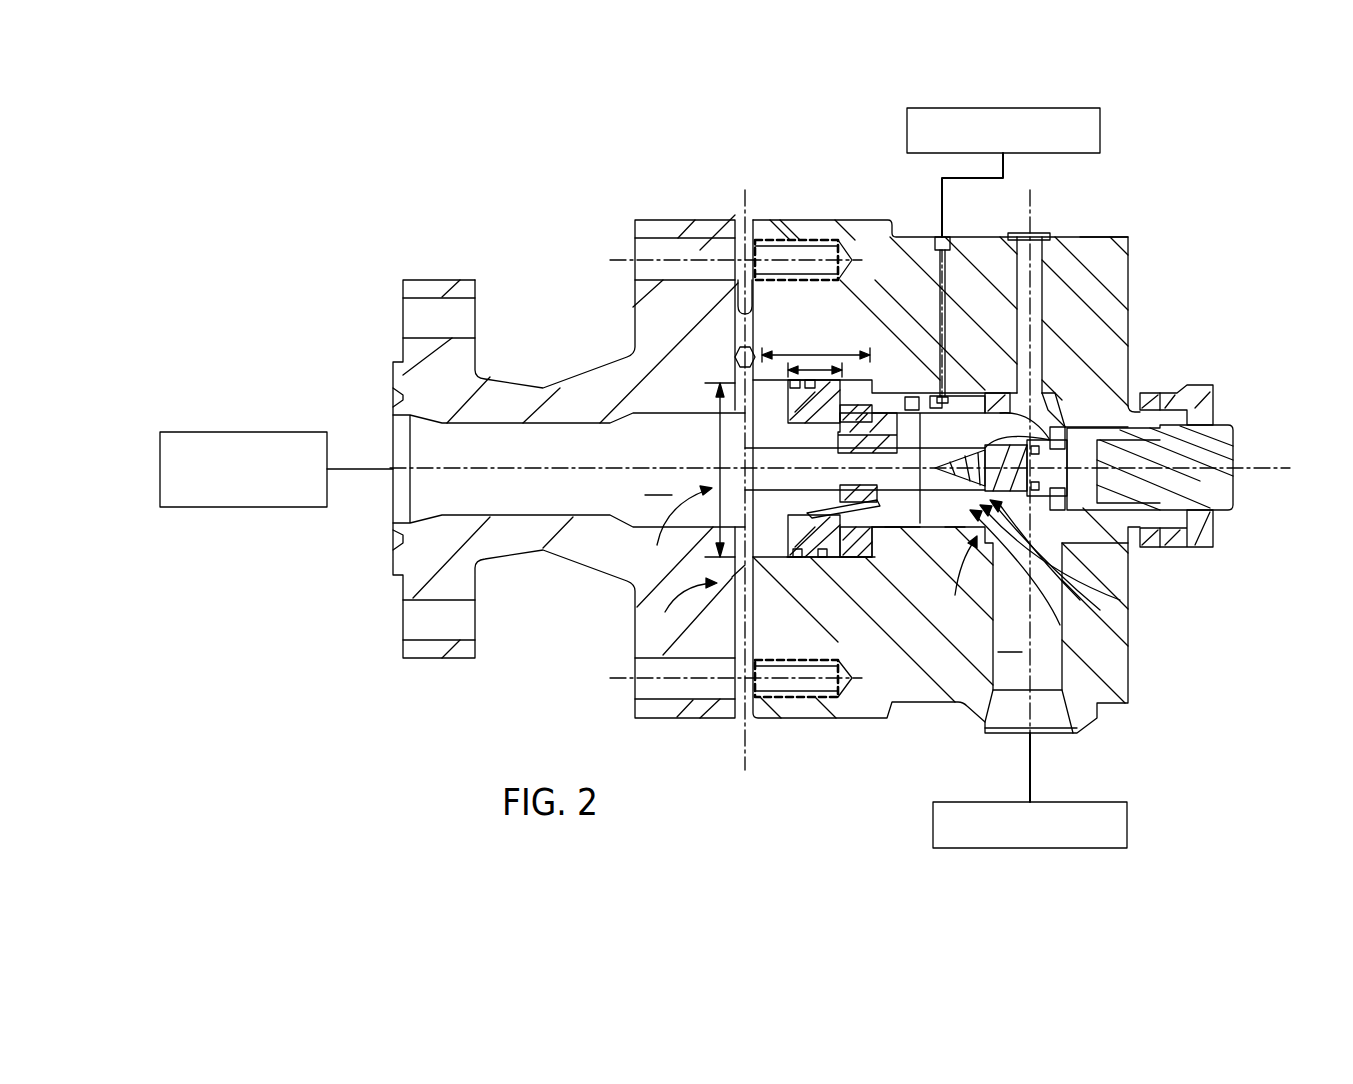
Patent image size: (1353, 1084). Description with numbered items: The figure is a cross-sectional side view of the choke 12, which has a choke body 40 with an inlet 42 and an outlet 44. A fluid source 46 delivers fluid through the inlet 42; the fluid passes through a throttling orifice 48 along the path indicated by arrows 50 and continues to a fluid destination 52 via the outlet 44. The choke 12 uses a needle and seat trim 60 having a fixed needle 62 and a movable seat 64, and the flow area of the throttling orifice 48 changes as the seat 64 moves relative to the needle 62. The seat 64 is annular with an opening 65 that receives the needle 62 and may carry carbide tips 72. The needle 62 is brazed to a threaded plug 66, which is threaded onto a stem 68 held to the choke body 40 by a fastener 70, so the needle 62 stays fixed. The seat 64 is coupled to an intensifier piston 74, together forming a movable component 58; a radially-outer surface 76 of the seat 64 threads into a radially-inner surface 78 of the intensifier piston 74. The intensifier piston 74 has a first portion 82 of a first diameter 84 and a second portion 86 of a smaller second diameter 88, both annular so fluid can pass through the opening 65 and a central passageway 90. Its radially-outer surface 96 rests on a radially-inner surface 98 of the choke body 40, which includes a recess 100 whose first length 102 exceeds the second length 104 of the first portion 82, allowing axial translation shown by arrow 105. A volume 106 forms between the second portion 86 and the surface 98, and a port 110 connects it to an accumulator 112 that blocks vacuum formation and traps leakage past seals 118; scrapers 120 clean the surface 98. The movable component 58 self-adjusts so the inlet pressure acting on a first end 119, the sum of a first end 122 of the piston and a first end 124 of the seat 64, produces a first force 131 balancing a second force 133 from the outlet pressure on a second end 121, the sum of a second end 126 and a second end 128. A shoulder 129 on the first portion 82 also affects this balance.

The choke 12 is at (1090, 214).
The choke body 40 is at (898, 255).
The inlet 42 is at (1043, 715).
The outlet 44 is at (536, 466).
The fluid source 46 is at (1127, 830).
The throttling orifice 48 is at (1005, 500).
The arrows 50 is at (1040, 520).
The fluid destination 52 is at (243, 432).
The movable component 58 is at (856, 478).
The needle and seat trim 60 is at (1128, 555).
The fixed needle 62 is at (1228, 446).
The movable seat 64 is at (1045, 382).
The opening 65 is at (915, 468).
The threaded plug 66 is at (1028, 434).
The stem 68 is at (1195, 498).
The fastener 70 is at (1205, 393).
The carbide tips 72 is at (1050, 510).
The intensifier piston 74 is at (788, 516).
The radially-outer surface of the seat 76 is at (898, 525).
The radially-inner surface of the intensifier piston 78 is at (893, 523).
The first portion 82 is at (790, 560).
The first diameter 84 is at (718, 412).
The second portion 86 is at (953, 530).
The second diameter 88 is at (1045, 418).
The central passageway 90 is at (836, 456).
The radially-outer surface of the intensifier piston 96 is at (847, 560).
The radially-inner surface of the choke body 98 is at (972, 540).
The recess 100 is at (865, 545).
The first length 102 is at (757, 327).
The second length 104 is at (812, 352).
The arrow 105 is at (735, 302).
The volume 106 is at (852, 540).
The port 110 is at (948, 278).
The accumulator 112 is at (1100, 130).
The seals 118 is at (920, 410).
The first end of the movable component 119 is at (1015, 520).
The scrapers 120 is at (800, 562).
The second end of the movable component 121 is at (822, 505).
The first end of the intensifier piston 122 is at (968, 407).
The first end of the seat 124 is at (1060, 395).
The second end of the intensifier piston 126 is at (732, 577).
The second end of the seat 128 is at (863, 503).
The shoulder 129 is at (850, 425).
The first force 131 is at (1005, 393).
The second force 133 is at (778, 403).